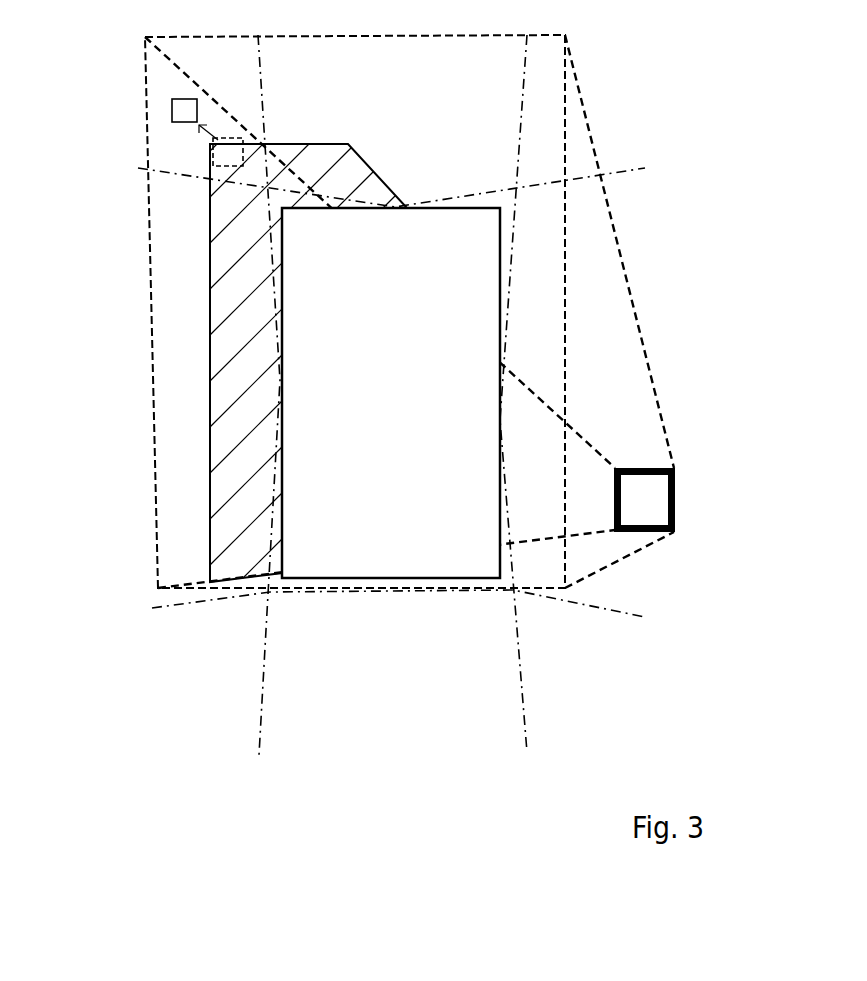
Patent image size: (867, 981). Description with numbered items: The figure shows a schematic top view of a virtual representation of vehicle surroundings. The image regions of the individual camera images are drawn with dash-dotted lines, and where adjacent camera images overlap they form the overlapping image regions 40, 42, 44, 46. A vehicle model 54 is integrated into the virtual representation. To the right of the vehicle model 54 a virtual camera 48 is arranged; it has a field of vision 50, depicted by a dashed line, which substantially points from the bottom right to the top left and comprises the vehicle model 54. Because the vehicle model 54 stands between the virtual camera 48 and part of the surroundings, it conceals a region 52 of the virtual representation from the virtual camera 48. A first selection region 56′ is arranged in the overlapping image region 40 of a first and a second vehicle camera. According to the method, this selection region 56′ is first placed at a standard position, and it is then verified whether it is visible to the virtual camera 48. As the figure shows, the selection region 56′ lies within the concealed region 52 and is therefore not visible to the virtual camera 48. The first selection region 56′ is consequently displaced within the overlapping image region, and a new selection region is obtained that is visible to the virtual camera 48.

The overlapping image region 40 is at (150, 70).
The overlapping image region 42 is at (220, 708).
The overlapping image region 44 is at (563, 660).
The overlapping image region 46 is at (605, 95).
The virtual camera 48 is at (660, 507).
The field of vision 50 is at (647, 363).
The concealed region 52 is at (225, 385).
The vehicle model 54 is at (293, 288).
The first selection region 56′ is at (228, 150).